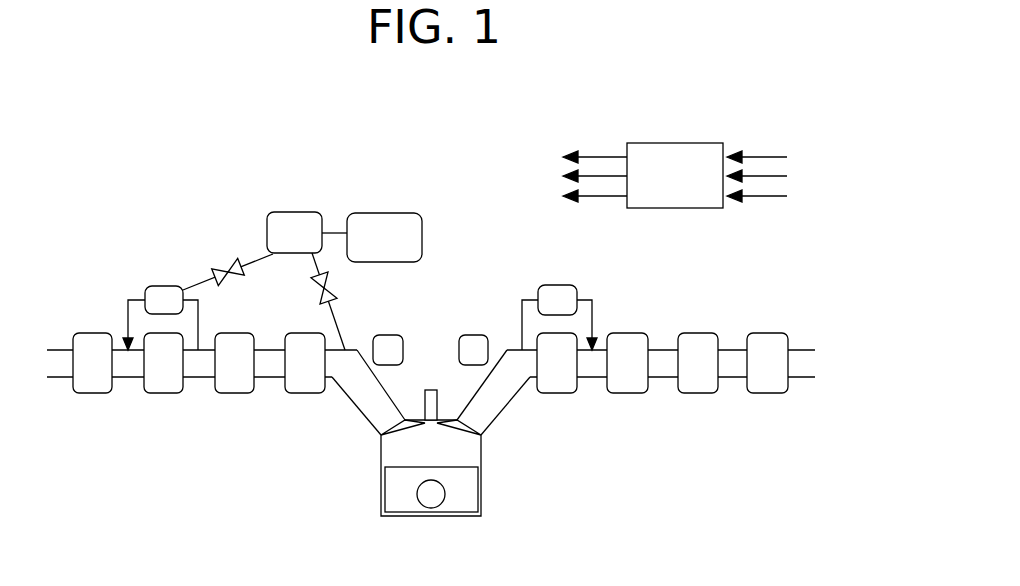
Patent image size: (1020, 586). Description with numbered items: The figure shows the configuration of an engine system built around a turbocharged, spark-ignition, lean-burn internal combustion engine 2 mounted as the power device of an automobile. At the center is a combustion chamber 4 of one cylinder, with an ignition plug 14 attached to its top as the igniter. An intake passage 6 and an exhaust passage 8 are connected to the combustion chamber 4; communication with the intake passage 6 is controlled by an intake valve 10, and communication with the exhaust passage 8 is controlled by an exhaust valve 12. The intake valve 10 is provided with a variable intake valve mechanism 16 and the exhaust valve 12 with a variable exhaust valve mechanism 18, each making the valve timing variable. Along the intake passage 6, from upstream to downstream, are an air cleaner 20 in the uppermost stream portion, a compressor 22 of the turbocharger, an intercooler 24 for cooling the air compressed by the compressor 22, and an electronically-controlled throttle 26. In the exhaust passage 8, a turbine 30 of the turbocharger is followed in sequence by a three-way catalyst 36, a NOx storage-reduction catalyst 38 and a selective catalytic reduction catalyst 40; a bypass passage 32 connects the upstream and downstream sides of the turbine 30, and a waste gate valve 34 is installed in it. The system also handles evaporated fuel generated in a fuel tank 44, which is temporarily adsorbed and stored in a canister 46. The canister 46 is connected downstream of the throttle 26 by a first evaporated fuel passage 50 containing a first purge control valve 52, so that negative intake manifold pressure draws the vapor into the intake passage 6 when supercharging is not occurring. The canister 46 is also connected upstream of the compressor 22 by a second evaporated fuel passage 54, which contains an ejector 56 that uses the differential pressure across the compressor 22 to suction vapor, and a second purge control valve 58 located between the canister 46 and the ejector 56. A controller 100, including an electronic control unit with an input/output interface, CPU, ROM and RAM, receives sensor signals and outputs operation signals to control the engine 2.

The internal combustion engine 2 is at (455, 288).
The combustion chamber 4 is at (396, 455).
The intake passage 6 is at (270, 377).
The exhaust passage 8 is at (662, 377).
The intake valve 10 is at (380, 432).
The exhaust valve 12 is at (483, 432).
The ignition plug 14 is at (430, 390).
The variable intake valve mechanism 16 is at (398, 335).
The variable exhaust valve mechanism 18 is at (468, 335).
The air cleaner 20 is at (92, 333).
The compressor 22 is at (162, 393).
The intercooler 24 is at (233, 333).
The throttle 26 is at (297, 333).
The turbine 30 is at (557, 393).
The bypass passage 32 is at (523, 300).
The waste gate valve 34 is at (563, 285).
The three-way catalyst 36 is at (628, 333).
The NOx storage-reduction catalyst 38 is at (698, 333).
The selective catalytic reduction catalyst 40 is at (765, 333).
The fuel tank 44 is at (383, 213).
The canister 46 is at (293, 212).
The first evaporated fuel passage 50 is at (341, 320).
The first purge control valve 52 is at (336, 292).
The second evaporated fuel passage 54 is at (193, 285).
The ejector 56 is at (153, 286).
The second purge control valve 58 is at (231, 262).
The controller 100 is at (673, 143).